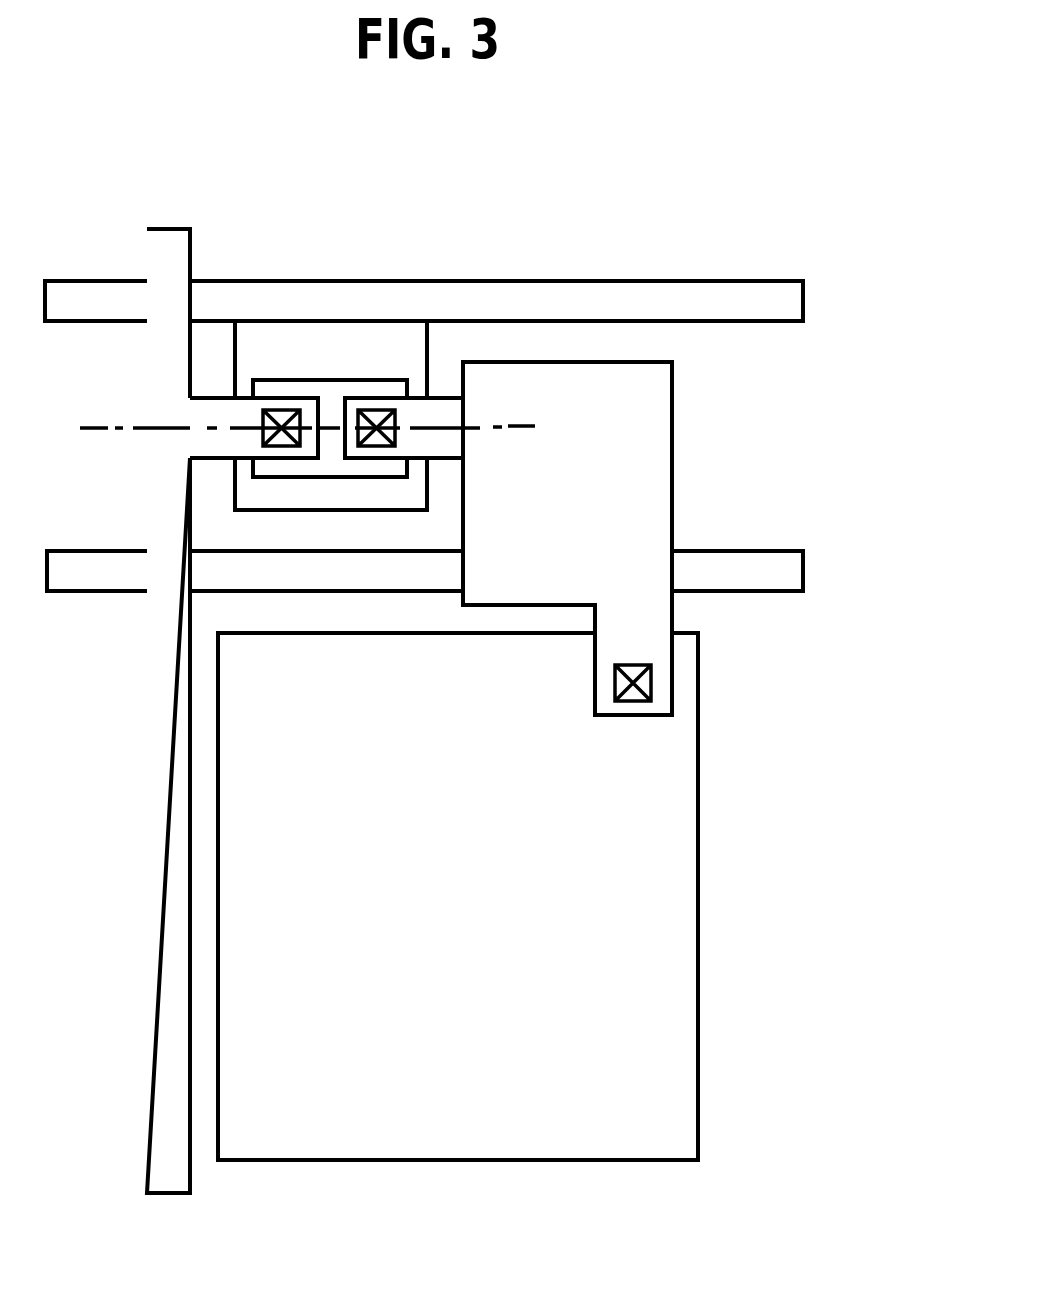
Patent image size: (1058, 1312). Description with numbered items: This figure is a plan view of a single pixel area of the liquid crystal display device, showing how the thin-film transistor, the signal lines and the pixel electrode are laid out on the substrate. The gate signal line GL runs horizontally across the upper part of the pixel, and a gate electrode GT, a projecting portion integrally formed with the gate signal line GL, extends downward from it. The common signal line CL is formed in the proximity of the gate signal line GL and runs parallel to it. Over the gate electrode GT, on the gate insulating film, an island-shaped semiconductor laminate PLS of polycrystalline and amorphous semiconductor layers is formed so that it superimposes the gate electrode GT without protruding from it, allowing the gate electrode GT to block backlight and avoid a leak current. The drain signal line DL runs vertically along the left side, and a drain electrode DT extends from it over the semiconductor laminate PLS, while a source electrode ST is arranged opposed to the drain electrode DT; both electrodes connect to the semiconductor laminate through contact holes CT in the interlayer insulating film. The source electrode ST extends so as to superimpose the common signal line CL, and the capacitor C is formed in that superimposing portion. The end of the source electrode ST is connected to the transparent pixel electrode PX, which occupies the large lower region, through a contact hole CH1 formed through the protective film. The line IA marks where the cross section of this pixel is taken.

The gate signal line GL is at (687, 281).
The common signal line CL is at (803, 570).
The drain signal line DL is at (146, 758).
The gate electrode GT is at (405, 510).
The semiconductor laminate PLS is at (323, 380).
The drain electrode DT is at (282, 397).
The source electrode ST is at (380, 397).
The contact hole CT is at (373, 446).
The capacitor C is at (672, 410).
The contact hole CH1 is at (651, 682).
The pixel electrode PX is at (698, 873).
The line IA- IA is at (95, 429).